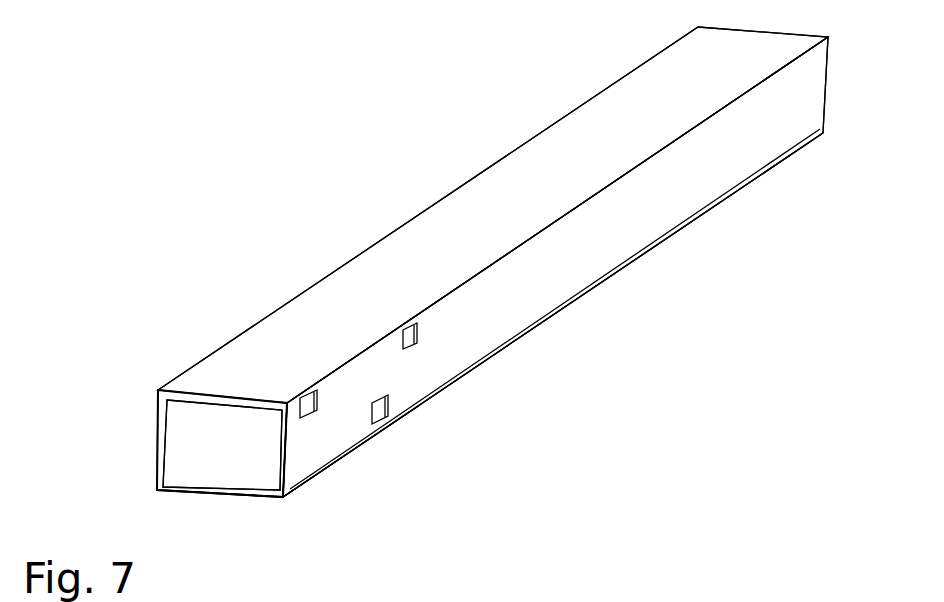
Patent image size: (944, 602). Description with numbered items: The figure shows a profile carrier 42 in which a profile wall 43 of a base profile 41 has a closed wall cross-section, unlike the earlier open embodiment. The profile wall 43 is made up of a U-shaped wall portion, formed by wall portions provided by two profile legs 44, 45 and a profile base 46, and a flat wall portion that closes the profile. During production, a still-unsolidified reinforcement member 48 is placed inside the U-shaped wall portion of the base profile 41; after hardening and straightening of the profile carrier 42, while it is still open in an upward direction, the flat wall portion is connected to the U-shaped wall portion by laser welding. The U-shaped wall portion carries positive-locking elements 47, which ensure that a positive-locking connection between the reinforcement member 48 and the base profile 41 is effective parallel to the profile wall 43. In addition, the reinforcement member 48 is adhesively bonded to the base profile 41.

The base profile 41 is at (330, 270).
The profile carrier 42 is at (427, 197).
The profile wall 43 is at (662, 222).
The profile leg 44 is at (310, 445).
The profile leg 45 is at (160, 442).
The profile base 46 is at (227, 497).
The positive-locking elements 47 is at (417, 340).
The reinforcement member 48 is at (235, 467).